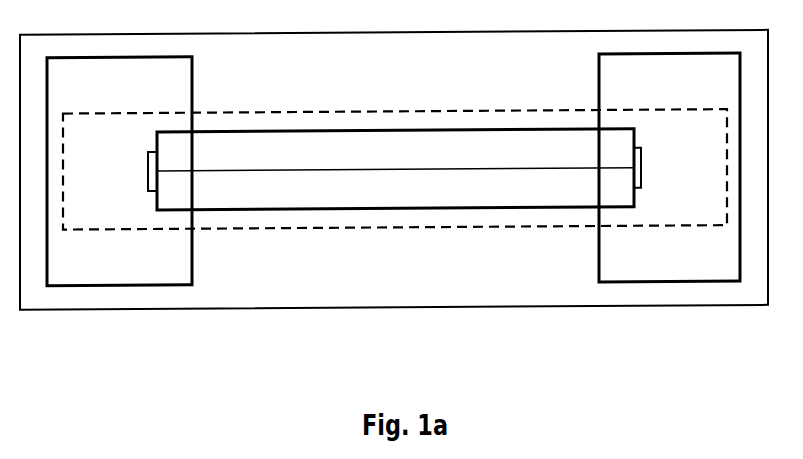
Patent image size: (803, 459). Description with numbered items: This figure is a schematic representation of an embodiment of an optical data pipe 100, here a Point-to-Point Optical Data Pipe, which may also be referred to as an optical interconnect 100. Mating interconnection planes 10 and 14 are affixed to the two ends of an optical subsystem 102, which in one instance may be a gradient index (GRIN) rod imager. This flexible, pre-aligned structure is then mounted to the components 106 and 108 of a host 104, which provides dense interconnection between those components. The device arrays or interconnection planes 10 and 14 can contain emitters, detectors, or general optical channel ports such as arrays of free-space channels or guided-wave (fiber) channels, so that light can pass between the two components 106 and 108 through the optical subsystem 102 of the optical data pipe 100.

The optical data pipe 100 is at (416, 113).
The optical subsystem 102 is at (414, 213).
The host 104 is at (633, 309).
The component 106 is at (192, 73).
The component 108 is at (598, 72).
The mating interconnection plane 10 is at (149, 170).
The mating interconnection plane 14 is at (642, 171).